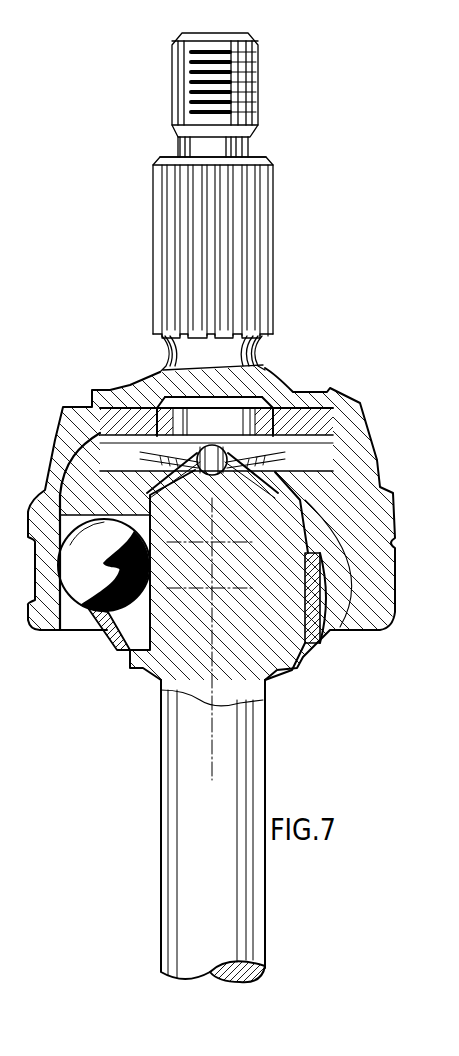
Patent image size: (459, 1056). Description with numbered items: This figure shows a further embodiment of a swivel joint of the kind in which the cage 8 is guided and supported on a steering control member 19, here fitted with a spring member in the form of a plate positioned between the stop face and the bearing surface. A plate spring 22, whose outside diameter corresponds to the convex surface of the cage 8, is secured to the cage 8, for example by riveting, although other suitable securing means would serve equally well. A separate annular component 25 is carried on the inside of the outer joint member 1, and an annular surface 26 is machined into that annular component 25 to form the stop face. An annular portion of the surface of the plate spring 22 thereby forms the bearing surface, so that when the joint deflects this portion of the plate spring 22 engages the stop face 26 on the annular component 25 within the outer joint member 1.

The outer joint member 1 is at (373, 548).
The cage 8 is at (327, 515).
The steering control member 19 is at (313, 600).
The plate spring 22 is at (300, 449).
The annular component 25 is at (283, 427).
The annular surface 26 is at (290, 422).